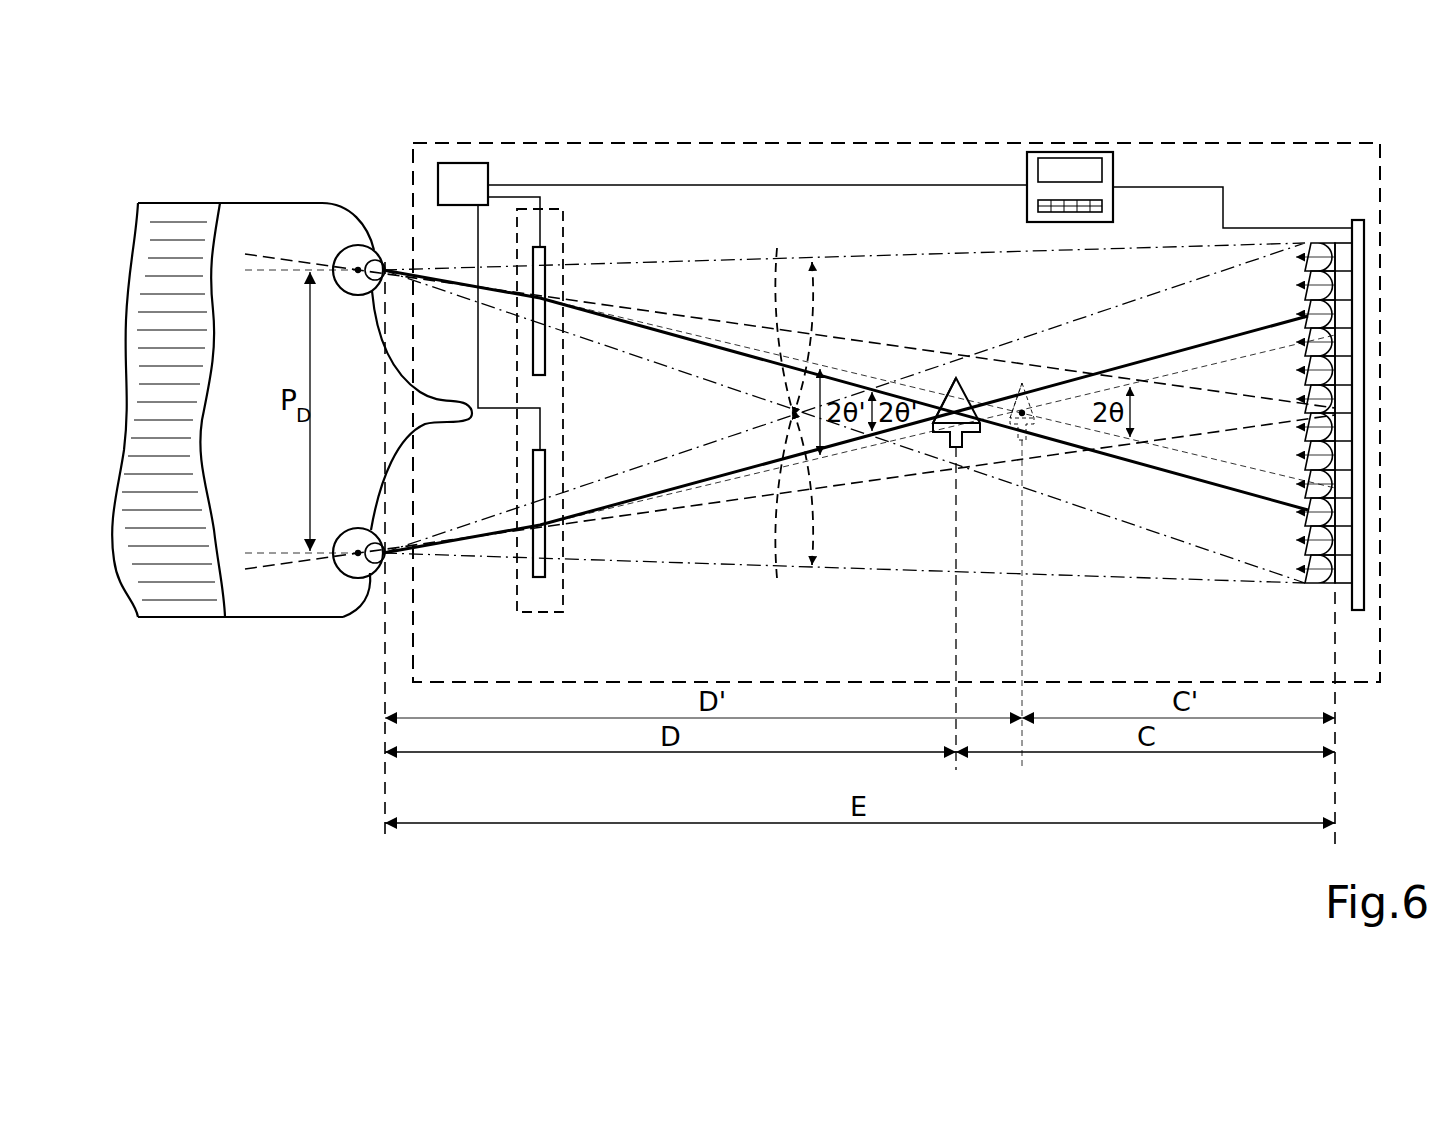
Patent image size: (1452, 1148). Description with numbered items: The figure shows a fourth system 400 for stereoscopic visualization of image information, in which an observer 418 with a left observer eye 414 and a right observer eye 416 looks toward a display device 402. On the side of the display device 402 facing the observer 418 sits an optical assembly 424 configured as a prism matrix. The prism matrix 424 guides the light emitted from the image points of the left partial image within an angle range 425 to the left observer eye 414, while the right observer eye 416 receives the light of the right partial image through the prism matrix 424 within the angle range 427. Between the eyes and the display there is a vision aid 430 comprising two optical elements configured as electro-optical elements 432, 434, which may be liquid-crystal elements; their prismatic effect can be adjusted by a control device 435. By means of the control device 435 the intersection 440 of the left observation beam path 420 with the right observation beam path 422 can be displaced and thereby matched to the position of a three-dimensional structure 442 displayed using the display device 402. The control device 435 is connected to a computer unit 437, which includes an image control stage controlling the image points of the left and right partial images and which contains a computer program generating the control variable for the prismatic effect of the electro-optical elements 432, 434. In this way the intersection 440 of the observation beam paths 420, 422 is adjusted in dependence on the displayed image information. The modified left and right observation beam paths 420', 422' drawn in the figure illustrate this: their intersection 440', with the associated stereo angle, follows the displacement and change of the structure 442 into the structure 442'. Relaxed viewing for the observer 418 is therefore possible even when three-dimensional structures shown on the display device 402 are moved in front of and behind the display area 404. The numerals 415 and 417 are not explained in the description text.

The fourth system for stereoscopic visualization 400 is at (1215, 143).
The display device 402 is at (1357, 220).
The display area 404 is at (1352, 575).
The left observer eye 414 is at (352, 295).
The first eye center / pupil 415 is at (358, 270).
The right observer eye 416 is at (358, 553).
The viewer face outline 417 is at (358, 553).
The observer 418 is at (233, 617).
The left observation beam path 420 is at (845, 390).
The modified left observation beam path 420' is at (780, 316).
The right observation beam path 422 is at (845, 434).
The modified right observation beam path 422' is at (780, 513).
The optical assembly (prism matrix) 424 is at (1305, 583).
The angle range 425 is at (813, 300).
The angle range 427 is at (813, 522).
The vision aid 430 is at (516, 233).
The electro-optical element 432 is at (548, 252).
The electro-optical element 434 is at (548, 572).
The control device 435 is at (463, 163).
The computer unit 437 is at (1070, 152).
The intersection 440 is at (954, 371).
The displaced intersection 440' is at (1025, 368).
The three-dimensional structure 442 is at (930, 371).
The displaced three-dimensional structure 442' is at (1063, 375).